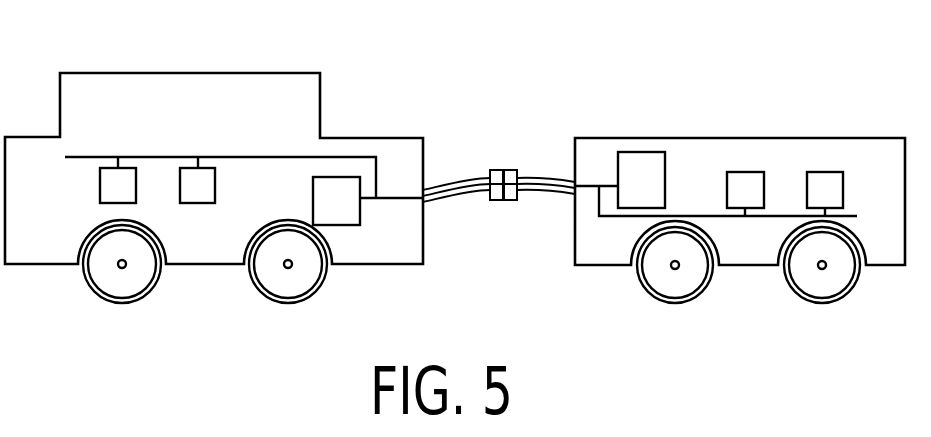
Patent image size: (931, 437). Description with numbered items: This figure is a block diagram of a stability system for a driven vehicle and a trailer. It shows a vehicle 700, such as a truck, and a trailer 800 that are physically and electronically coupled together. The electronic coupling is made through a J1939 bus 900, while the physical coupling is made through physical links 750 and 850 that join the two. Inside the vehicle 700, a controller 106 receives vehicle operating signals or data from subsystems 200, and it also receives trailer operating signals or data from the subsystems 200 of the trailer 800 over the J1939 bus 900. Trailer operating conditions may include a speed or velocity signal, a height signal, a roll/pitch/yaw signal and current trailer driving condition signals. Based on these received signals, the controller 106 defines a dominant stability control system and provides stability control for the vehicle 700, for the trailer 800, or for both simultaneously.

The vehicle 700 is at (188, 72).
The trailer 800 is at (710, 138).
The subsystems 200 is at (192, 168).
The controller 106 is at (338, 225).
The J1939 bus 900 is at (386, 198).
The physical link 750 is at (455, 178).
The physical link 850 is at (539, 176).